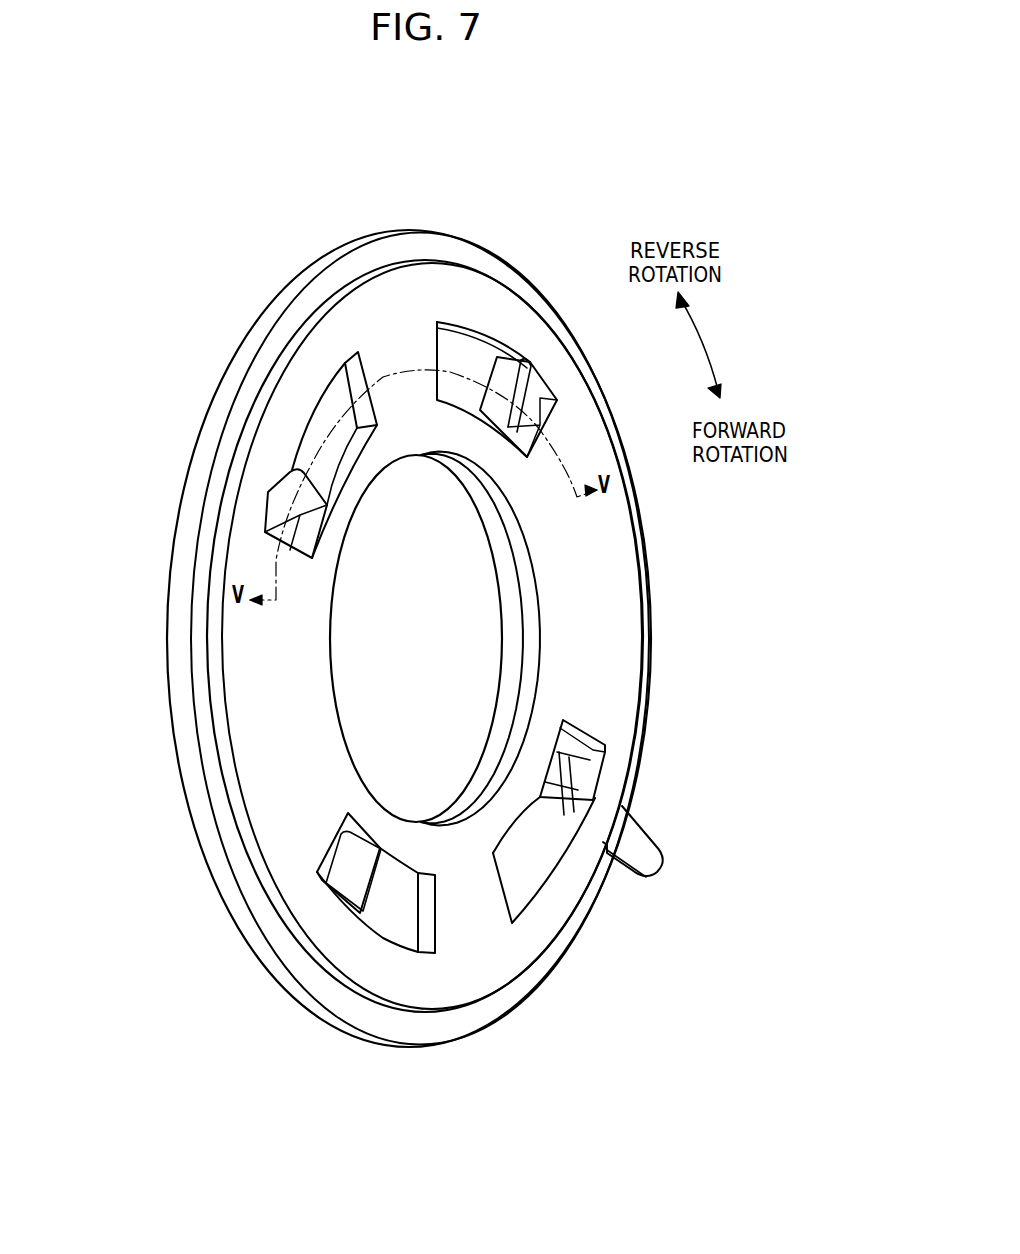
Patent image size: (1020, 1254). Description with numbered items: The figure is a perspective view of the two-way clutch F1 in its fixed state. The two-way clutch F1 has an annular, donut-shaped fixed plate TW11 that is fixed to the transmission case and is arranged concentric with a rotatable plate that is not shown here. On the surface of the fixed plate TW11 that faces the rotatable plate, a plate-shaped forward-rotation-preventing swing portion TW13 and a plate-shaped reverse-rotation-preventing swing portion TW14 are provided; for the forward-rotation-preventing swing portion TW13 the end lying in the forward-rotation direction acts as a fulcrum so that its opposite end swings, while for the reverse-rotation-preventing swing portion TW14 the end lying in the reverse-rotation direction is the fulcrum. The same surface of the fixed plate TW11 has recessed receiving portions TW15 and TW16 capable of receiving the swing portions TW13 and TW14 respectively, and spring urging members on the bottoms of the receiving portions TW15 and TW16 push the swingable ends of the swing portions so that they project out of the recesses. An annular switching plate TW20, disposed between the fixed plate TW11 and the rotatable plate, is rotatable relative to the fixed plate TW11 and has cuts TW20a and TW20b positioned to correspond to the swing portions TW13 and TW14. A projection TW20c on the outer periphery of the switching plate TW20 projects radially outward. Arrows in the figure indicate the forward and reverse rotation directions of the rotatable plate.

The two-way clutch F1 is at (160, 142).
The fixed plate TW11 is at (473, 255).
The switching plate TW20 is at (375, 305).
The cut TW20a is at (472, 355).
The cut TW20b is at (335, 400).
The projection TW20c is at (660, 848).
The forward-rotation-preventing swing portion TW13 is at (515, 385).
The reverse-rotation-preventing swing portion TW14 is at (280, 492).
The receiving portion TW15 is at (500, 375).
The receiving portion TW16 is at (548, 780).